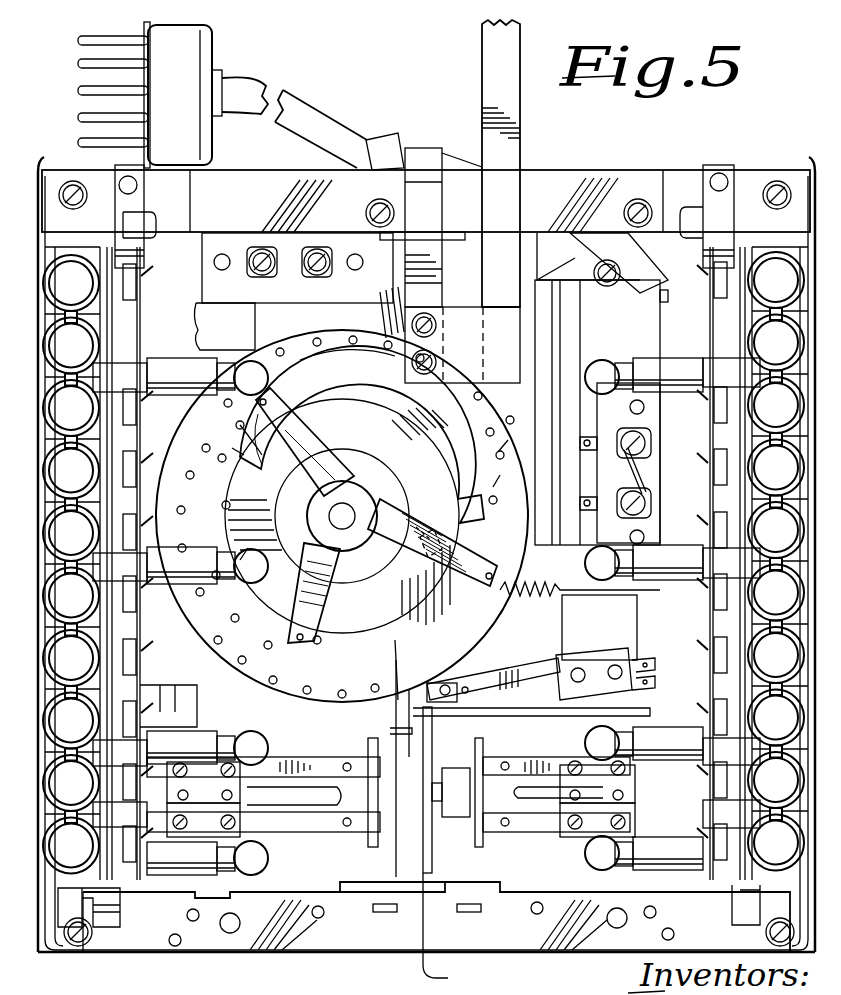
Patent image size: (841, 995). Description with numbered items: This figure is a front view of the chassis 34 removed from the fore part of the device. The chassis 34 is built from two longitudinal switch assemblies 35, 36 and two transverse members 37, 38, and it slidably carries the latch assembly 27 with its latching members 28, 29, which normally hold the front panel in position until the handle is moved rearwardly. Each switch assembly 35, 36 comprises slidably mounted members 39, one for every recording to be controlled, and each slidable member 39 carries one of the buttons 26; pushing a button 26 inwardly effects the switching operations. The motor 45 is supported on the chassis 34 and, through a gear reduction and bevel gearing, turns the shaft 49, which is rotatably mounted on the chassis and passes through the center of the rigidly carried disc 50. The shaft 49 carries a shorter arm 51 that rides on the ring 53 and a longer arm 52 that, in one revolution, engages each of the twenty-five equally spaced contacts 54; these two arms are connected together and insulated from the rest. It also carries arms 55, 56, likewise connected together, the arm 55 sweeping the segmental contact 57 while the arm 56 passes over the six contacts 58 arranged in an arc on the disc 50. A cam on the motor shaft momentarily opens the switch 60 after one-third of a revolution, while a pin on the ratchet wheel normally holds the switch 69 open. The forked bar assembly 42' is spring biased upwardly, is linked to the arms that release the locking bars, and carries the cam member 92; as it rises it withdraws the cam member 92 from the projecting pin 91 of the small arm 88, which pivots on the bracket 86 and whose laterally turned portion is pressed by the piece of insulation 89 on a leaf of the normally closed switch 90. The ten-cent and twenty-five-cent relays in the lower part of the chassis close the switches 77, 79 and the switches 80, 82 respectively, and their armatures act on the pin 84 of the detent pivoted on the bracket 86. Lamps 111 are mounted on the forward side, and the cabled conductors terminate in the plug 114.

The plug 114 is at (195, 56).
The latch assembly 27 is at (482, 122).
The latching member 28 is at (425, 216).
The transverse member 37 is at (567, 190).
The chassis 34 is at (620, 170).
The switch assembly 35 is at (80, 244).
The switch assembly 36 is at (774, 234).
The slidably mounted member 39 is at (130, 296).
The button 26 is at (95, 297).
The switch 69 is at (385, 312).
The motor 45 is at (540, 404).
The disc 50 is at (485, 610).
The shaft 49 is at (343, 505).
The segmental contact 57 is at (400, 412).
The arm 55 is at (290, 418).
The arm 52 is at (468, 558).
The arm 51 is at (420, 568).
The ring 53 is at (430, 522).
The arm 56 is at (316, 628).
The contacts 58 is at (258, 470).
The contacts 54 is at (200, 440).
The lamps 111 is at (257, 372).
The switch 82 is at (300, 760).
The switch 80 is at (302, 818).
The switch 60 is at (192, 706).
The bar assembly 42' is at (372, 768).
The switch 77 is at (535, 757).
The switch 79 is at (527, 822).
The pin 84 is at (438, 775).
The bracket 86 is at (432, 851).
The arm 88 is at (432, 712).
The projecting pin 91 is at (425, 731).
The cam member 92 is at (393, 718).
The switch 90 is at (497, 682).
The piece of insulation 89 is at (446, 685).
The transverse member 38 is at (312, 945).
The latching member 29 is at (440, 980).